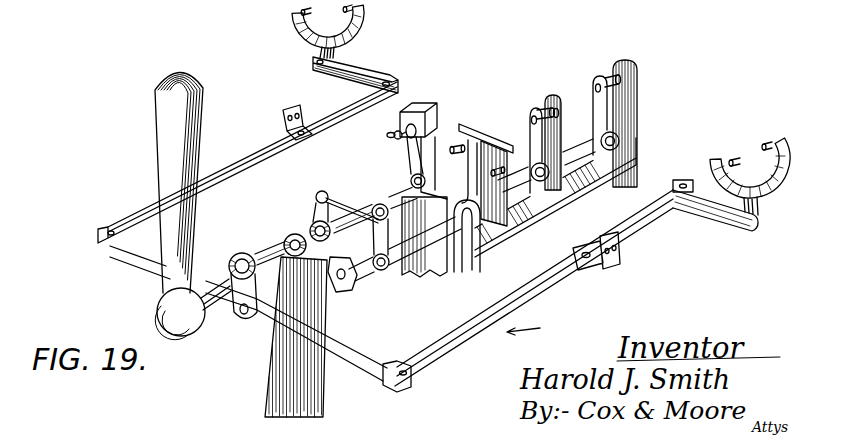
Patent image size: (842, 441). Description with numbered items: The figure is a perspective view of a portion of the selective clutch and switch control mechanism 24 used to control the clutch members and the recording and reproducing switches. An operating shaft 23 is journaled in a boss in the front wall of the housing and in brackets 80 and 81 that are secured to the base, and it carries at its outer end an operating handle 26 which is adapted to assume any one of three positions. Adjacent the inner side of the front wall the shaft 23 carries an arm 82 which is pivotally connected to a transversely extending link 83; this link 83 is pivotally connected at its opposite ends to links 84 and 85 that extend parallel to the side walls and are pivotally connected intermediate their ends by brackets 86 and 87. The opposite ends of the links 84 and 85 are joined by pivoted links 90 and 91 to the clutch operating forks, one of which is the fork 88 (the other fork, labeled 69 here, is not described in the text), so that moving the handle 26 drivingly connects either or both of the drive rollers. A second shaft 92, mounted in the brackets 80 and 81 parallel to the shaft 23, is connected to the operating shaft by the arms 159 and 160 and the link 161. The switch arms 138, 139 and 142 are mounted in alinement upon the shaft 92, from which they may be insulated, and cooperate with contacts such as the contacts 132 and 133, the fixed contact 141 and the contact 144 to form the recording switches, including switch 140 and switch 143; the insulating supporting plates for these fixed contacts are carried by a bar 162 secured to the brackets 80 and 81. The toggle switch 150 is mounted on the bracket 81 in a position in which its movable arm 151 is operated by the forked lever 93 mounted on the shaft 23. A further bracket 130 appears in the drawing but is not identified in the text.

The operating shaft 23 is at (230, 302).
The selective clutch and switch control mechanism 24 is at (541, 328).
The operating handle 26 is at (156, 82).
The clip 69 is at (772, 138).
The bracket 80 is at (265, 387).
The bracket 81 is at (452, 256).
The arm 82 is at (241, 254).
The transversely extending link 83 is at (370, 372).
The link 84 is at (140, 212).
The link 85 is at (440, 352).
The bracket 86 is at (282, 125).
The bracket 87 is at (618, 263).
The clutch operating fork 88 is at (364, 23).
The pivoted link 90 is at (352, 65).
The pivoted link 91 is at (702, 188).
The shaft 92 is at (408, 244).
The forked lever 93 is at (401, 162).
The bracket 130 is at (465, 111).
The contact 132 is at (461, 138).
The contact 133 is at (500, 180).
The contact arm 138 is at (481, 145).
The switch arm 139 is at (533, 110).
The switch 140 is at (548, 96).
The fixed contact 141 is at (556, 113).
The switch arm 142 is at (597, 90).
The switch 143 is at (610, 69).
The contact 144 is at (638, 77).
The toggle switch 150 is at (428, 98).
The movable arm 151 is at (387, 137).
The arm 159 is at (313, 203).
The arm 160 is at (372, 237).
The link 161 is at (337, 207).
The bar 162 is at (558, 200).